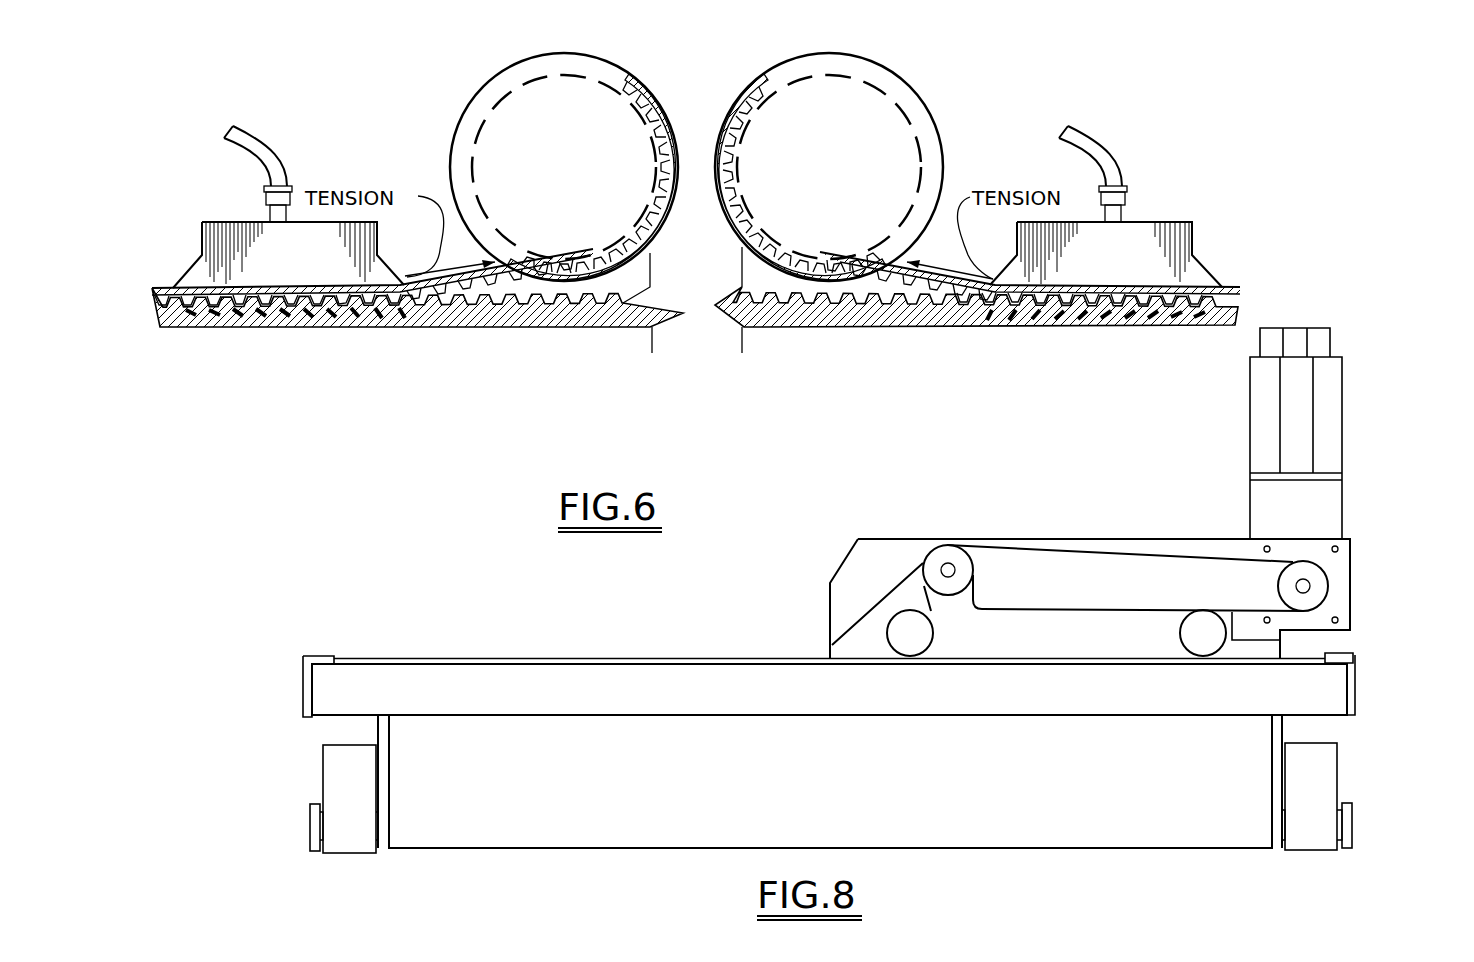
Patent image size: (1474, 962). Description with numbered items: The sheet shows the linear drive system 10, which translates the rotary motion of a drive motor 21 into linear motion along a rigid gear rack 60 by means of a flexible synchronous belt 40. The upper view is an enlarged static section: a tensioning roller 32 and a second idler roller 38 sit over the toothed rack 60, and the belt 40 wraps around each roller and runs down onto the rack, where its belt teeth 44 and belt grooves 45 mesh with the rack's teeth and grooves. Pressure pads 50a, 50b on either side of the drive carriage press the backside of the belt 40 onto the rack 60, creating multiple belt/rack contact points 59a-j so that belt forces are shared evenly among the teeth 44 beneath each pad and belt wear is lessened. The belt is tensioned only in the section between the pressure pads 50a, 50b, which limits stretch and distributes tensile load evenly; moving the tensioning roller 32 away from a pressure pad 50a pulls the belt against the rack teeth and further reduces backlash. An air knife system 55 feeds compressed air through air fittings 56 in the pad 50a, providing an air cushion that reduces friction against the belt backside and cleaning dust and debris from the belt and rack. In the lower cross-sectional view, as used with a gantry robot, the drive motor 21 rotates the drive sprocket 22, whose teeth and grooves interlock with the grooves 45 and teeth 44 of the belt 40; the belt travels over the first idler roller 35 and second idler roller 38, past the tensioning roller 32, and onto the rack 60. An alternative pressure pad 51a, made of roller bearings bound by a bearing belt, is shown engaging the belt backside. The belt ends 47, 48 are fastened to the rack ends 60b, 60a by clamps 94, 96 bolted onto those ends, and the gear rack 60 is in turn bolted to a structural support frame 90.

In FIG. 8, the linear drive system 10 is at (1068, 500).
In FIG. 8, the drive motor 21 is at (1360, 422).
In FIG. 8, the drive sprocket 22 is at (1322, 586).
In FIG. 6, the tensioning roller 32 is at (600, 54).
In FIG. 8, the tensioning roller 32 is at (1183, 645).
In FIG. 8, the first idler roller 35 is at (948, 545).
In FIG. 6, the second idler roller 38 is at (893, 80).
In FIG. 8, the second idler roller 38 is at (897, 630).
In FIG. 6, the synchronous belt 40 is at (660, 110).
In FIG. 8, the synchronous belt 40 is at (1090, 552).
In FIG. 6, the belt teeth 44 is at (674, 133).
In FIG. 6, the belt grooves 45 is at (700, 143).
In FIG. 8, the belt end 47 is at (317, 642).
In FIG. 8, the belt end 48 is at (1343, 654).
In FIG. 6, the pressure pad 50a is at (1172, 222).
In FIG. 8, the pressure pad 50b is at (880, 680).
In FIG. 8, the pressure pad 51a is at (1308, 667).
In FIG. 6, the air knife system 55 is at (1140, 182).
In FIG. 6, the air fittings 56 is at (1087, 136).
In FIG. 6, the belt/rack contact points 59a-j is at (1201, 314).
In FIG. 6, the gear rack 60 is at (535, 327).
In FIG. 8, the gear rack 60 is at (627, 730).
In FIG. 8, the rack end 60a is at (1332, 712).
In FIG. 8, the rack end 60b is at (328, 708).
In FIG. 8, the structural support frame 90 is at (477, 861).
In FIG. 8, the clamp 94 is at (290, 692).
In FIG. 8, the clamp 96 is at (1368, 661).